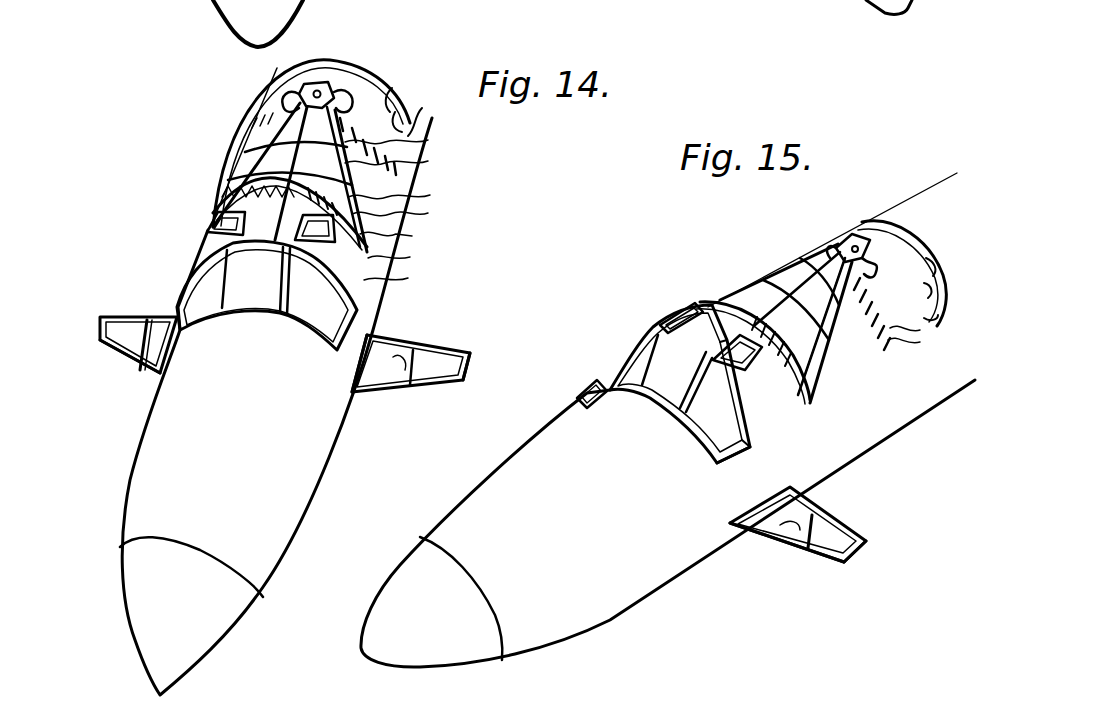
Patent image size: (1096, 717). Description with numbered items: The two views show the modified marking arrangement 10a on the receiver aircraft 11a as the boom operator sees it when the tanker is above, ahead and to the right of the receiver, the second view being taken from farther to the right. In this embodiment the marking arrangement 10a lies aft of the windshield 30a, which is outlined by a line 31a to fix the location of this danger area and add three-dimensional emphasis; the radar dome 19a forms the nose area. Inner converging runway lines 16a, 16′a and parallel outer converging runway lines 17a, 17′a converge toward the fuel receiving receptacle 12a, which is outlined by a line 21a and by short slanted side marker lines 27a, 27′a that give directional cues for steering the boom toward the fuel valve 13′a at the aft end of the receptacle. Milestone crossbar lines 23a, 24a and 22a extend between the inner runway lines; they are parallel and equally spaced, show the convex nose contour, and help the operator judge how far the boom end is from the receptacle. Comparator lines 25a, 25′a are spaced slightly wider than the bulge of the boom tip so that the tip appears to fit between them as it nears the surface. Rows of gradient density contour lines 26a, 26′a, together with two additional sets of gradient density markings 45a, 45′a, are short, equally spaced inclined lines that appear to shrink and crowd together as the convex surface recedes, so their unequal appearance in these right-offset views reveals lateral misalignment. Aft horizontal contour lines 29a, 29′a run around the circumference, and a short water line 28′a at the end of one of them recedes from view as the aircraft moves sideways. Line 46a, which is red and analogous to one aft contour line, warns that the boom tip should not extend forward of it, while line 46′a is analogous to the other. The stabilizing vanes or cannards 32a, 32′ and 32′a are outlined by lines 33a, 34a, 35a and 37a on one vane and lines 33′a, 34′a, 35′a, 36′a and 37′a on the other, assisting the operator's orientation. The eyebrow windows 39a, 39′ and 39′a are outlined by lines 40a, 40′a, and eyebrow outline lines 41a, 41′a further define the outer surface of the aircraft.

In FIG. 14, the marking arrangement 10a is at (436, 158).
In FIG. 15, the marking arrangement 10a is at (730, 266).
In FIG. 14, the aircraft 11a is at (140, 443).
In FIG. 15, the aircraft 11a is at (656, 598).
In FIG. 14, the fuel receiving receptacle 12a is at (326, 62).
In FIG. 15, the fuel receiving receptacle 12a is at (888, 222).
In FIG. 15, the fuel valve 13′a is at (857, 222).
In FIG. 14, the inner converging runway line 16a is at (250, 150).
In FIG. 15, the inner converging runway line 16a is at (790, 262).
In FIG. 14, the inner converging runway line 16′a is at (409, 221).
In FIG. 15, the inner converging runway line 16′a is at (826, 337).
In FIG. 14, the outer converging runway line 17a is at (262, 108).
In FIG. 15, the outer converging runway line 17a is at (790, 256).
In FIG. 14, the outer converging runway line 17′a is at (460, 206).
In FIG. 15, the outer converging runway line 17′a is at (822, 350).
In FIG. 14, the radar dome 19a is at (130, 612).
In FIG. 15, the radar dome 19a is at (356, 642).
In FIG. 14, the line 21a is at (332, 82).
In FIG. 15, the line 21a is at (898, 238).
In FIG. 14, the milestone crossbar line 22a is at (258, 128).
In FIG. 14, the milestone crossbar line 23a is at (407, 197).
In FIG. 15, the milestone crossbar line 23a is at (742, 286).
In FIG. 14, the milestone crossbar line 24a is at (345, 180).
In FIG. 15, the milestone crossbar line 24a is at (830, 325).
In FIG. 14, the comparator line 25a is at (240, 170).
In FIG. 15, the comparator line 25a is at (762, 272).
In FIG. 14, the comparator line 25′a is at (293, 224).
In FIG. 15, the comparator line 25′a is at (782, 288).
In FIG. 14, the gradient density contour line 26a is at (264, 100).
In FIG. 14, the gradient density contour line 26′a is at (428, 134).
In FIG. 15, the gradient density contour line 26′a is at (927, 339).
In FIG. 14, the side marker line 27a is at (316, 80).
In FIG. 15, the side marker line 27a is at (832, 240).
In FIG. 14, the side marker line 27′a is at (350, 92).
In FIG. 15, the side marker line 27′a is at (878, 276).
In FIG. 14, the water line 28′a is at (424, 110).
In FIG. 15, the water line 28′a is at (926, 320).
In FIG. 14, the aft horizontal contour line 29a is at (398, 110).
In FIG. 15, the aft horizontal contour line 29a is at (934, 280).
In FIG. 14, the aft horizontal contour line 29′a is at (394, 90).
In FIG. 15, the aft horizontal contour line 29′a is at (932, 259).
In FIG. 14, the windshield 30a is at (230, 315).
In FIG. 15, the windshield 30a is at (638, 392).
In FIG. 14, the line 31a is at (290, 330).
In FIG. 15, the line 31a is at (698, 433).
In FIG. 14, the stabilizing vane 32a is at (102, 315).
In FIG. 15, the stabilizing vane 32a is at (586, 380).
In FIG. 14, the stabilizing vane 32′ is at (476, 350).
In FIG. 15, the stabilizing vane 32′a is at (872, 544).
In FIG. 14, the vane outline line 33a is at (118, 357).
In FIG. 14, the vane outline line 33′a is at (438, 384).
In FIG. 15, the vane outline line 33′a is at (814, 554).
In FIG. 14, the vane outline line 34a is at (142, 318).
In FIG. 14, the vane outline line 34′a is at (406, 348).
In FIG. 15, the vane outline line 34′a is at (840, 524).
In FIG. 14, the vane outline line 35a is at (108, 330).
In FIG. 14, the vane outline line 35′a is at (469, 364).
In FIG. 15, the vane outline line 35′a is at (856, 558).
In FIG. 14, the vane outline line 36′a is at (365, 376).
In FIG. 15, the vane outline line 36′a is at (760, 506).
In FIG. 14, the vane outline line 37a is at (150, 368).
In FIG. 14, the vane outline line 37′a is at (382, 390).
In FIG. 15, the vane outline line 37′a is at (762, 540).
In FIG. 14, the eyebrow window 39a is at (212, 232).
In FIG. 15, the eyebrow window 39a is at (672, 318).
In FIG. 15, the eyebrow window 39′ is at (746, 396).
In FIG. 14, the eyebrow window 39′a is at (335, 248).
In FIG. 14, the outline line 40a is at (208, 228).
In FIG. 15, the outline line 40a is at (660, 324).
In FIG. 14, the outline line 40′a is at (311, 281).
In FIG. 15, the outline line 40′a is at (711, 385).
In FIG. 14, the eyebrow outline line 41a is at (245, 279).
In FIG. 15, the eyebrow outline line 41a is at (664, 360).
In FIG. 14, the eyebrow outline line 41′a is at (262, 280).
In FIG. 15, the eyebrow outline line 41′a is at (678, 380).
In FIG. 14, the gradient density contour marking 45a is at (232, 190).
In FIG. 15, the gradient density contour marking 45a is at (738, 300).
In FIG. 14, the gradient density contour marking 45′a is at (407, 241).
In FIG. 15, the gradient density contour marking 45′a is at (776, 356).
In FIG. 14, the line 46a is at (407, 279).
In FIG. 15, the line 46a is at (796, 392).
In FIG. 14, the line 46′a is at (412, 259).
In FIG. 15, the line 46′a is at (730, 346).